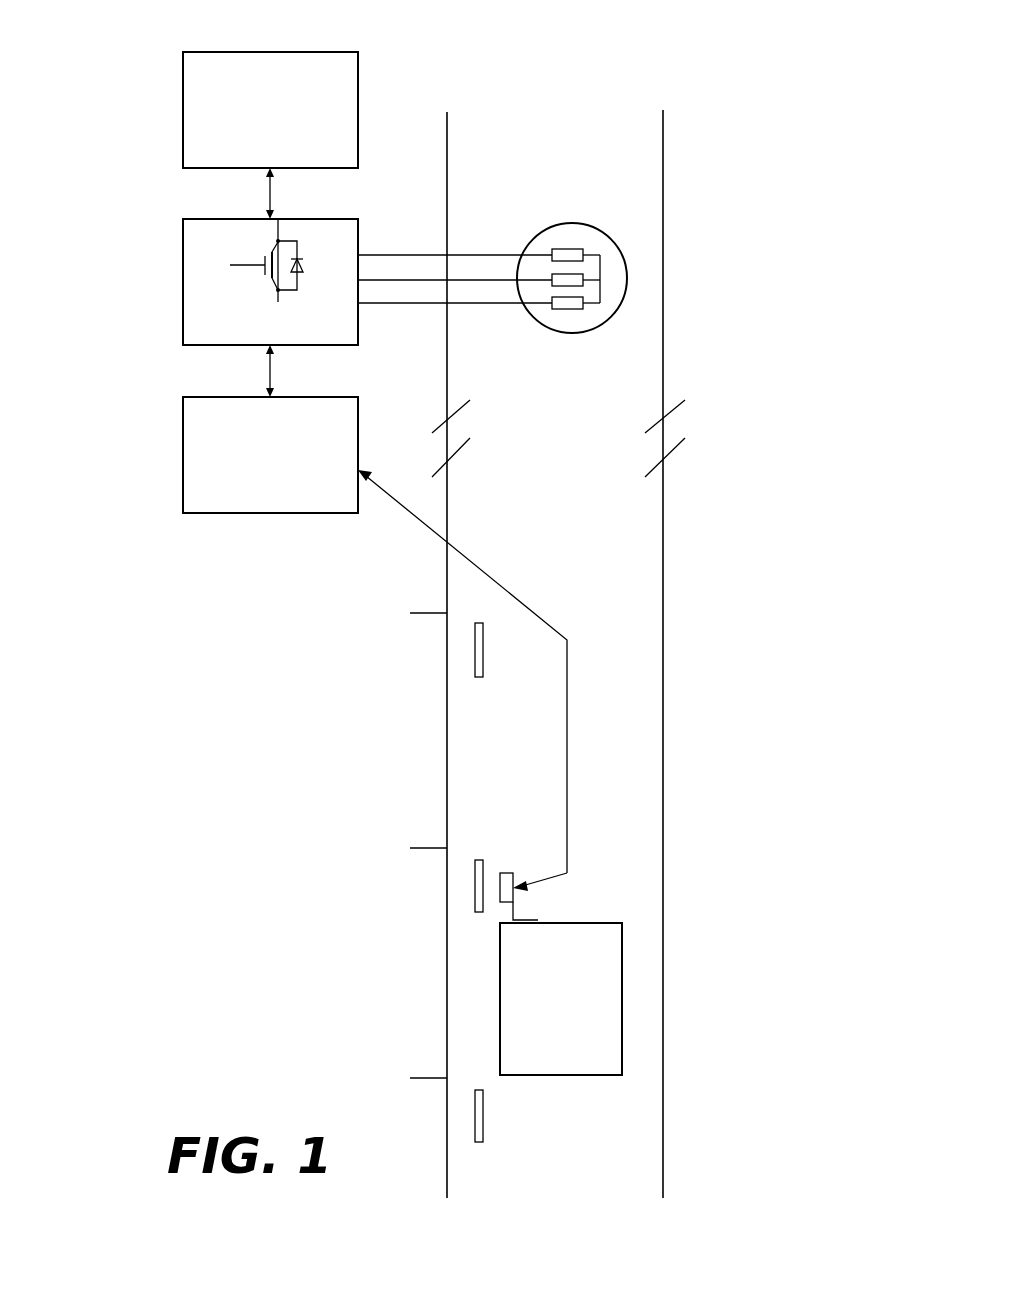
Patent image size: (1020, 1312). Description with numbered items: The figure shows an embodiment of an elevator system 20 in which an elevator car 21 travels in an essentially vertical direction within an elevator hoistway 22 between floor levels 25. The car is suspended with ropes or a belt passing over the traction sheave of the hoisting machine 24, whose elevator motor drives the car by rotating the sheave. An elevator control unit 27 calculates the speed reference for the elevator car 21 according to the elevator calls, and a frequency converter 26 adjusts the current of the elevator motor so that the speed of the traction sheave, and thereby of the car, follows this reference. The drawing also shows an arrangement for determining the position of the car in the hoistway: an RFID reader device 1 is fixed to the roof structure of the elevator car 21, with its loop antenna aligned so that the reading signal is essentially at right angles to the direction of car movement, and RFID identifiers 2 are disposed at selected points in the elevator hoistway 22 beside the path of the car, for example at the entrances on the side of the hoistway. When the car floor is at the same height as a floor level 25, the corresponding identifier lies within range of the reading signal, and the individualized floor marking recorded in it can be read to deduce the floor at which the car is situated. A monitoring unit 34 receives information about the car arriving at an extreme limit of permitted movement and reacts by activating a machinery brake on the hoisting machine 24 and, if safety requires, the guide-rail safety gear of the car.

The RFID reader device 1 is at (510, 873).
The RFID identifier 2 is at (483, 1118).
The elevator system 20 is at (733, 101).
The elevator car 21 is at (500, 980).
The elevator hoistway 22 is at (543, 495).
The hoisting machine 24 is at (588, 224).
The floor level 25 is at (428, 1078).
The frequency converter 26 is at (183, 265).
The elevator control unit 27 is at (183, 88).
The monitoring unit 34 is at (183, 445).